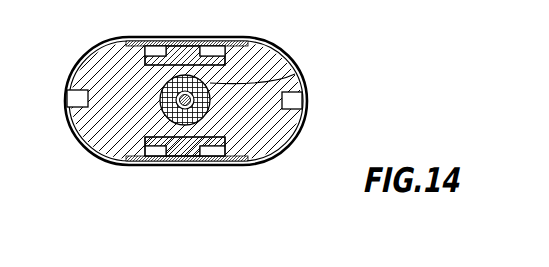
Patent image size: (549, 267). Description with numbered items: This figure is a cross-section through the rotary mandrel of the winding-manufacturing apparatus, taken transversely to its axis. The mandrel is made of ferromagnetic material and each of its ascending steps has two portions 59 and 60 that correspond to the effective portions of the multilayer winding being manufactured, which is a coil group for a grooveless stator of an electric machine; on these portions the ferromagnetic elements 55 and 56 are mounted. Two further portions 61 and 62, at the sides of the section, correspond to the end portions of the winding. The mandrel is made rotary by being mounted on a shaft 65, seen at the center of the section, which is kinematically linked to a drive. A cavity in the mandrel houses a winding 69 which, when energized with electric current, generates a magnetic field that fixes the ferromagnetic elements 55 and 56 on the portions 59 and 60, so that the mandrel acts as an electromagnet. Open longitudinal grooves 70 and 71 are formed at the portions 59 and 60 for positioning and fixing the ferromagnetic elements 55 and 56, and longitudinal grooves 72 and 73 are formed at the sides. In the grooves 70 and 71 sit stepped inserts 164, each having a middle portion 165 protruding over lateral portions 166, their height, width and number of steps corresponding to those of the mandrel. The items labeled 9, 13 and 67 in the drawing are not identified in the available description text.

The cable 9 is at (295, 74).
The outer shell 13 is at (121, 36).
The ferromagnetic element 55 is at (217, 60).
The ferromagnetic element 56 is at (190, 152).
The step portion 59 is at (137, 48).
The step portion 60 is at (141, 161).
The end portion 61 is at (79, 115).
The end portion 62 is at (297, 117).
The shaft 65 is at (160, 100).
The lower shell portion 67 is at (88, 150).
The winding 69 is at (150, 92).
The open longitudinal groove 70 is at (256, 39).
The open longitudinal groove 71 is at (230, 166).
The longitudinal groove 72 is at (77, 98).
The longitudinal groove 73 is at (297, 99).
The insert 164 is at (272, 46).
The middle portion 165 is at (196, 52).
The lateral portion 166 is at (158, 49).